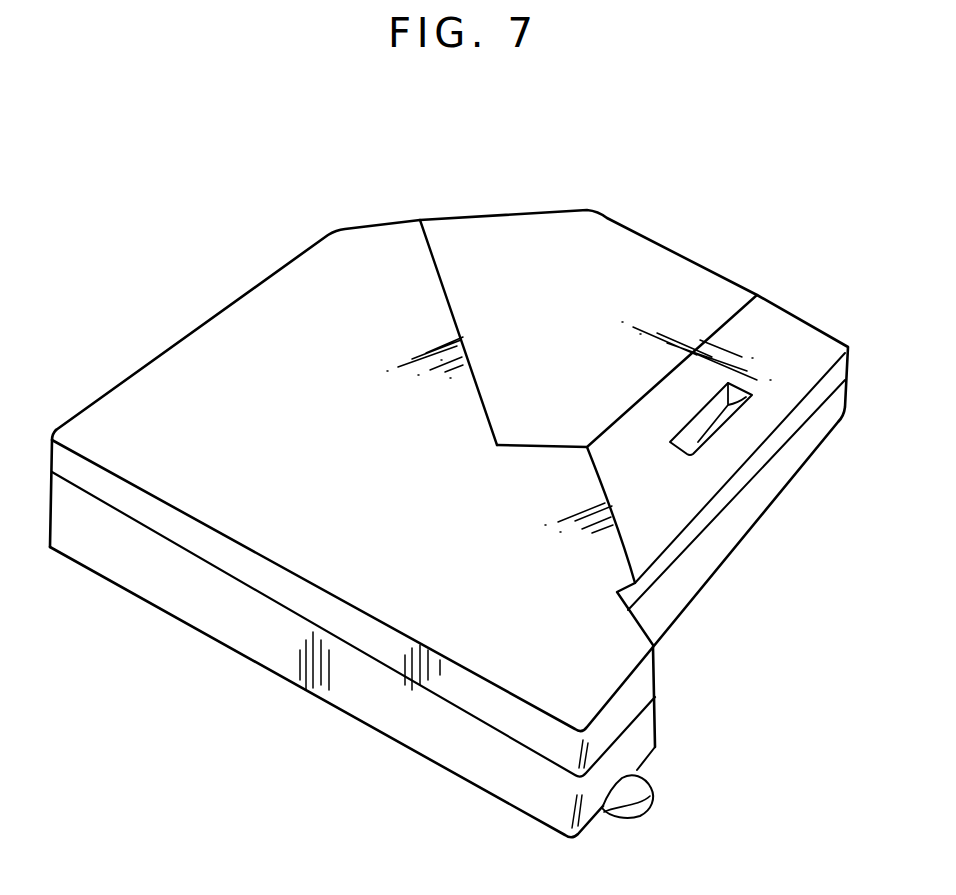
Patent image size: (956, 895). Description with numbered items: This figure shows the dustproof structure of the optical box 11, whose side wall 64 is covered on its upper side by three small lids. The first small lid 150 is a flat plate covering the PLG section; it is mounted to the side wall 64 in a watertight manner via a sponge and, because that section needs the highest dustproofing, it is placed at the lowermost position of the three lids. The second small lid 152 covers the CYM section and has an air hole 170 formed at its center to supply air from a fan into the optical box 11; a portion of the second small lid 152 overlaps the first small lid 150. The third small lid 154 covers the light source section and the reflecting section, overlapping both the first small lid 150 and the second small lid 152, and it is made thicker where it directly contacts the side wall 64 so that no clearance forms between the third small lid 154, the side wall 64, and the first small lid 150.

The optical box 11 is at (515, 205).
The side wall 64 is at (265, 642).
The first small lid 150 is at (647, 267).
The second small lid 152 is at (800, 334).
The third small lid 154 is at (218, 308).
The air hole 170 is at (698, 442).